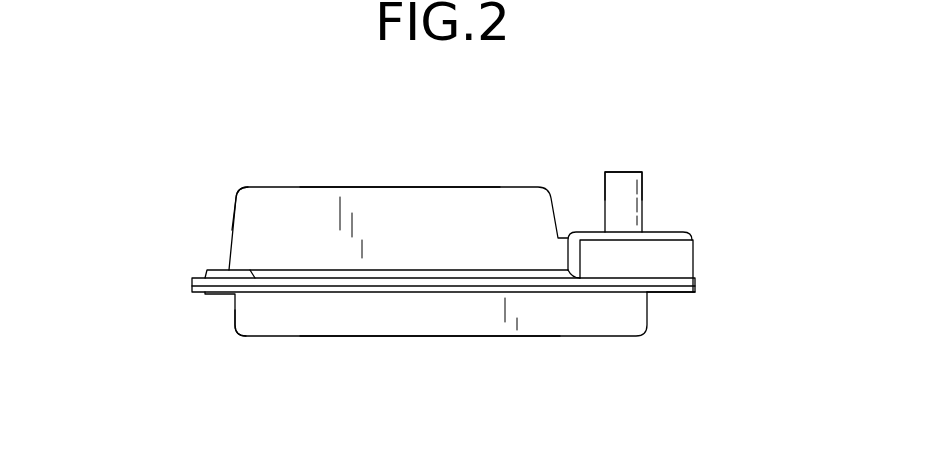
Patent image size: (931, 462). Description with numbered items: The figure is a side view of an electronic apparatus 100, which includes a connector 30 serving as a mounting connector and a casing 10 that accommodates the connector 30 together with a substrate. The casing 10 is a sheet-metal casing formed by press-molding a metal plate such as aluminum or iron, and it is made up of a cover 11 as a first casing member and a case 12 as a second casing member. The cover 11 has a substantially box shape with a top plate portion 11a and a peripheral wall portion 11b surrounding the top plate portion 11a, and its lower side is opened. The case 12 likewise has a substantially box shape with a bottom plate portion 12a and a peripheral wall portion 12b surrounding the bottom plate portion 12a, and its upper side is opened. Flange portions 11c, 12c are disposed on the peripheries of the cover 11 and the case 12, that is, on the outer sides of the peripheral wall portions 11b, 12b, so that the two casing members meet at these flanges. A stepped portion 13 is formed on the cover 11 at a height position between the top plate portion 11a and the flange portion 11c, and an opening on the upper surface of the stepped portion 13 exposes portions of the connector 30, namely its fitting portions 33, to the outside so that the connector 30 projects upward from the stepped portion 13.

The electronic apparatus 100 is at (254, 154).
The casing 10 is at (155, 238).
The cover 11 is at (229, 238).
The top plate portion 11a is at (474, 186).
The peripheral wall portion 11b is at (233, 203).
The flange portion 11c is at (697, 275).
The case 12 is at (236, 312).
The bottom plate portion 12a is at (438, 338).
The peripheral wall portion 12b is at (238, 329).
The flange portion 12c is at (677, 293).
The stepped portion 13 is at (690, 234).
The connector 30 is at (643, 178).
The fitting portions 33 is at (605, 178).